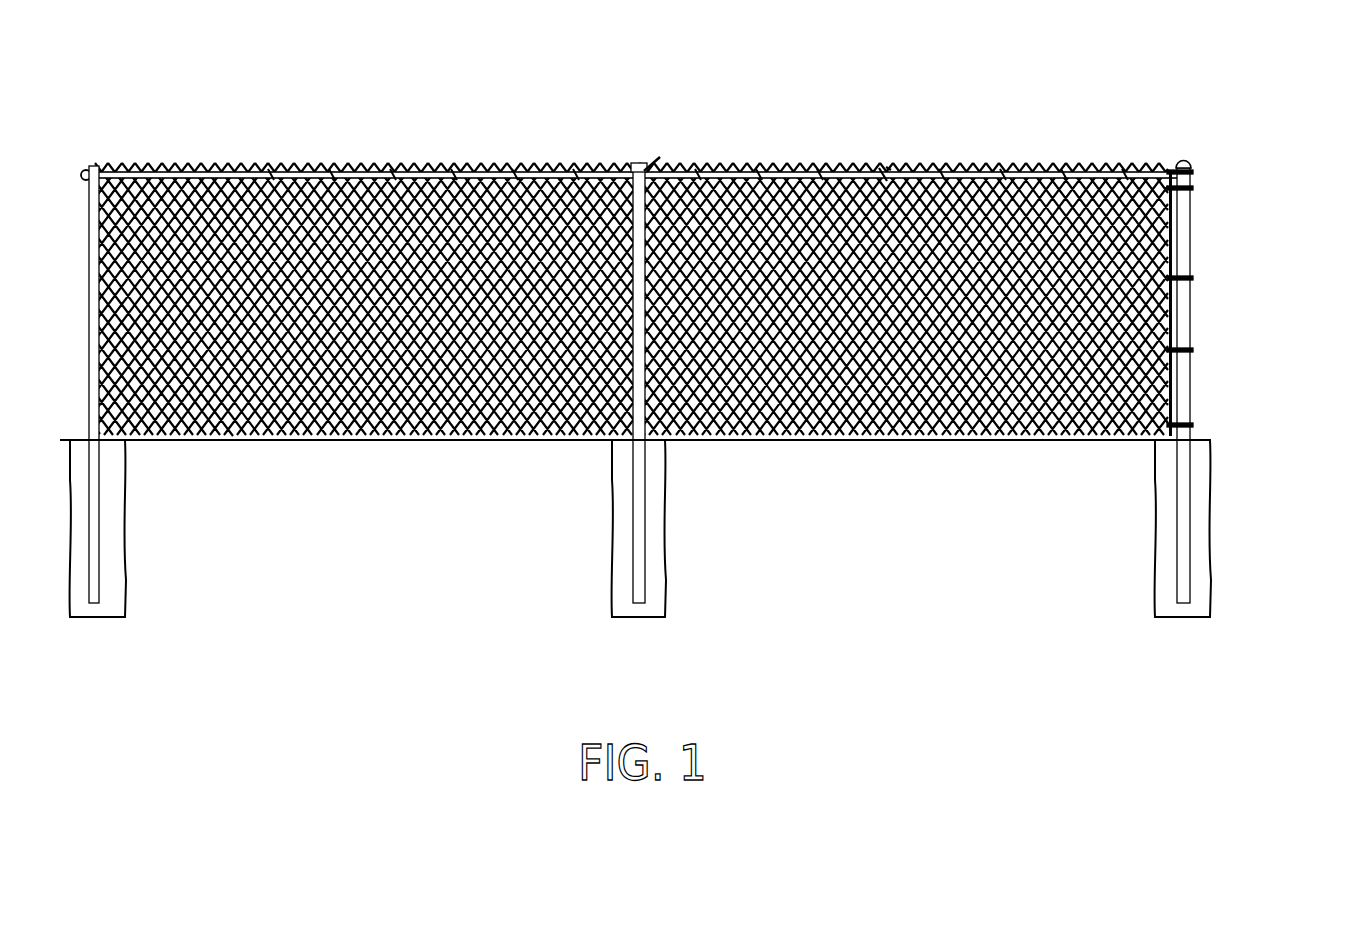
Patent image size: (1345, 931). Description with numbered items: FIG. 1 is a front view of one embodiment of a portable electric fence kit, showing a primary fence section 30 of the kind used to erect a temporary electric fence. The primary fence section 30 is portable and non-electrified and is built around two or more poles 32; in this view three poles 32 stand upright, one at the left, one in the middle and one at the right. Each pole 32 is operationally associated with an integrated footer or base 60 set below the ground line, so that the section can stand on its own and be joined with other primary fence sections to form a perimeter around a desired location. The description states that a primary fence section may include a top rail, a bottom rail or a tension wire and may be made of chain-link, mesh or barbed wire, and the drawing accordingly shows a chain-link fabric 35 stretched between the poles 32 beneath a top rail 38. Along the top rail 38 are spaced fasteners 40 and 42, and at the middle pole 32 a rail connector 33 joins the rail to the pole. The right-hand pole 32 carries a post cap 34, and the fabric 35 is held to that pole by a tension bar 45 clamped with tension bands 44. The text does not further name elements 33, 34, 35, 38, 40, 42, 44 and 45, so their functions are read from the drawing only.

The primary fence section 30 is at (699, 357).
The pole 32 is at (590, 173).
The rail end connector 33 is at (650, 170).
The post cap 34 is at (1188, 158).
The chain link fabric 35 is at (408, 353).
The top rail 38 is at (818, 172).
The tie wire 40 is at (310, 173).
The rail tie 42 is at (885, 172).
The tension band 44 is at (1190, 278).
The tension bar 45 is at (1180, 317).
The integrated footer or base 60 is at (658, 460).